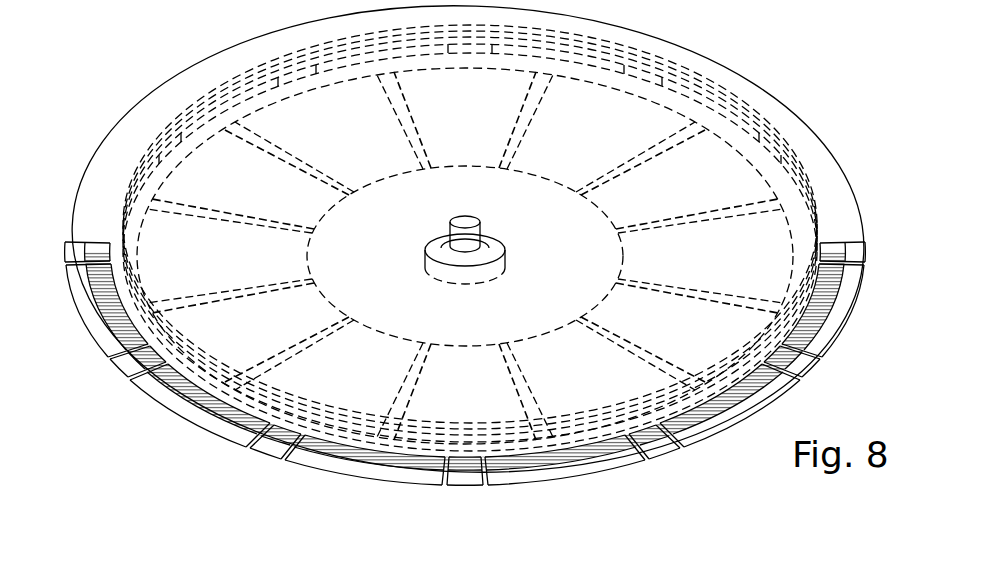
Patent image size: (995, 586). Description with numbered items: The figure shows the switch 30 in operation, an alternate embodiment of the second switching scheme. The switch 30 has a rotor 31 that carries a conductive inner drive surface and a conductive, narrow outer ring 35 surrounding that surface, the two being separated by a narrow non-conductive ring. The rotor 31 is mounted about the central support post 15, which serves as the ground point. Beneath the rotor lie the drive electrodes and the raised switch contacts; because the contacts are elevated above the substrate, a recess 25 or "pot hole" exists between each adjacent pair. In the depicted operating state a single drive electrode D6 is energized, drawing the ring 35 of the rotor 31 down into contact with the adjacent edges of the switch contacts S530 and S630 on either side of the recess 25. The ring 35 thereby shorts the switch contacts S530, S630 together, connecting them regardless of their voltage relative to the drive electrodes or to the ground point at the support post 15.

The switch 30 is at (770, 40).
The rotor 31 is at (215, 60).
The outer ring 35 is at (132, 148).
The support post 15 is at (496, 232).
The recess 25 is at (662, 455).
The switch contact S630 is at (447, 482).
The switch contact S530 is at (481, 482).
The drive electrode D6 is at (478, 413).